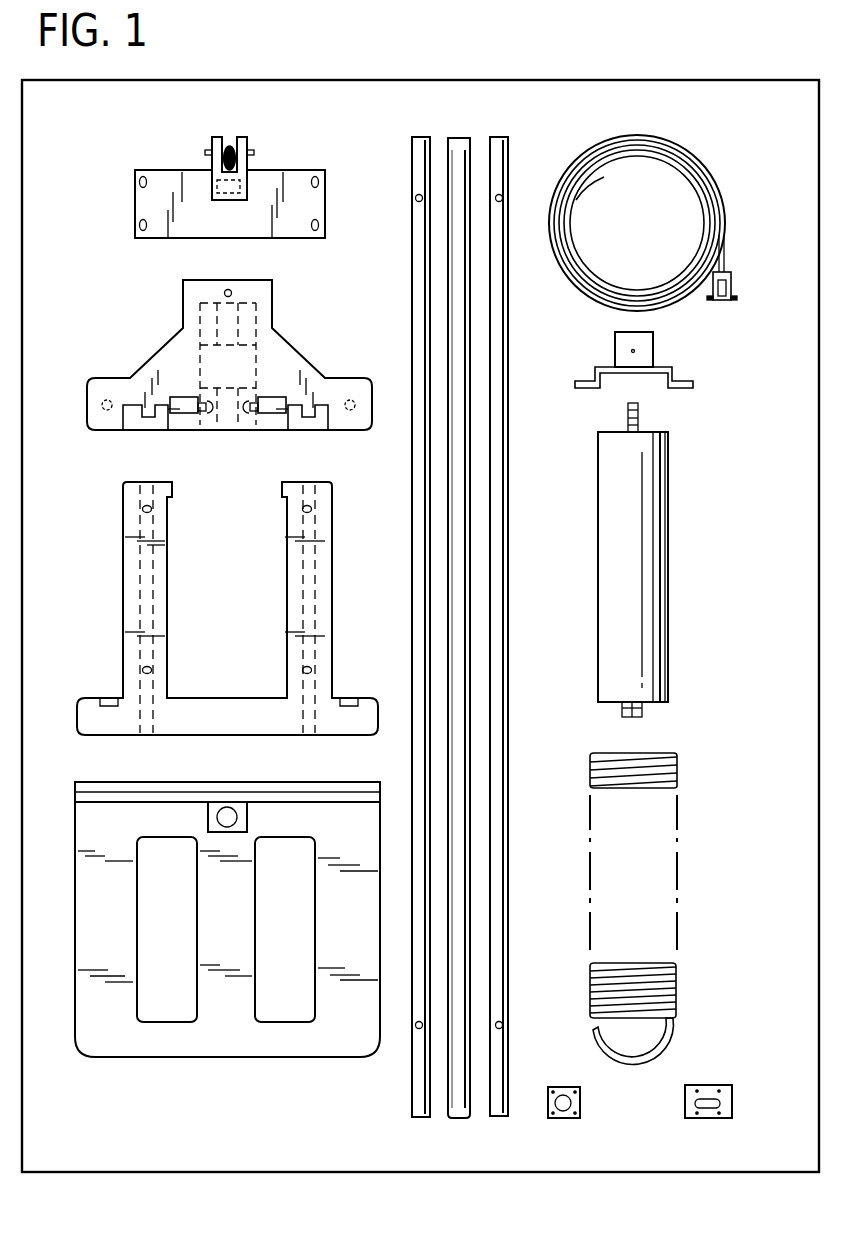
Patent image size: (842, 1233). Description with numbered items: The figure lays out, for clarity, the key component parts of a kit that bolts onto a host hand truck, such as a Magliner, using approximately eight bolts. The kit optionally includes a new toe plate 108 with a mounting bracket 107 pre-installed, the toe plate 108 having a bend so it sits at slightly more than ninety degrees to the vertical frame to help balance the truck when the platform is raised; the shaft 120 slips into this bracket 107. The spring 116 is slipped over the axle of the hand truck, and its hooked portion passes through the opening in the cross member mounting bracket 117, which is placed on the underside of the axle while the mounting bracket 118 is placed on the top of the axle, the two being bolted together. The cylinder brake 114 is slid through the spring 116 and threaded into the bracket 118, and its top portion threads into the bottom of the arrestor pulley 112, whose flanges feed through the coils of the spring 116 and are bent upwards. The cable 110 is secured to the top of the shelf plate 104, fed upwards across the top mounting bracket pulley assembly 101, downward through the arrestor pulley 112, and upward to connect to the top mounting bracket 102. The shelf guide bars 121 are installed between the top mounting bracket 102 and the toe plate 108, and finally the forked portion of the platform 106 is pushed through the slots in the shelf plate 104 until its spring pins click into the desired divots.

The top mounting bracket pulley assembly 101 is at (193, 150).
The top mounting bracket 102 is at (132, 208).
The shelf plate 104 is at (158, 343).
The platform 106 is at (118, 575).
The mounting bracket 107 is at (207, 817).
The toe plate 108 is at (202, 955).
The cable 110 is at (718, 180).
The arrestor pulley 112 is at (692, 373).
The cylinder brake 114 is at (677, 565).
The spring 116 is at (683, 885).
The cross member mounting bracket 117 is at (708, 1117).
The mounting bracket 118 is at (563, 1120).
The shaft 120 is at (452, 1121).
The shelf guide bars 121 is at (416, 134).